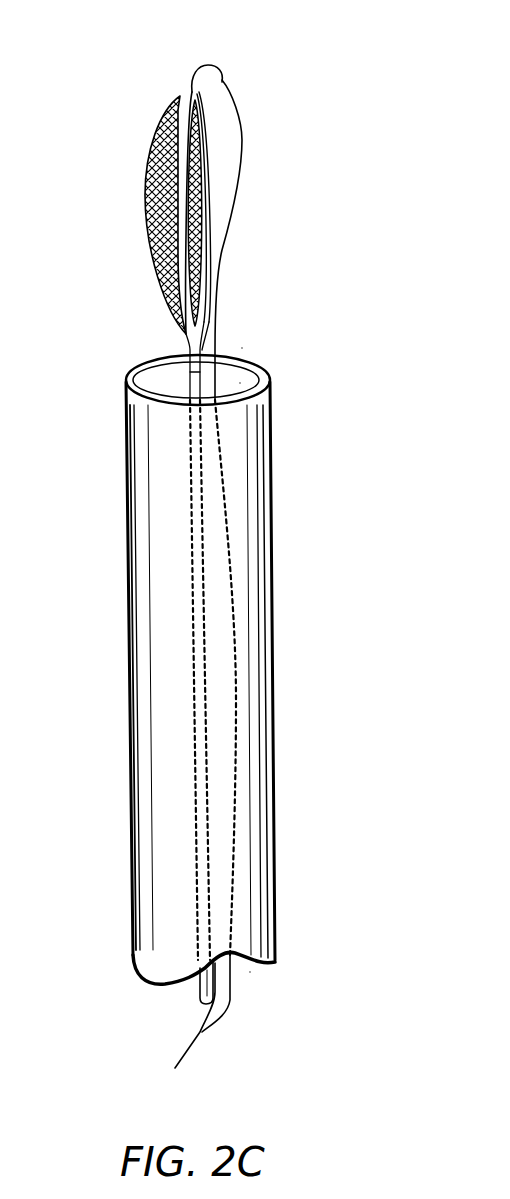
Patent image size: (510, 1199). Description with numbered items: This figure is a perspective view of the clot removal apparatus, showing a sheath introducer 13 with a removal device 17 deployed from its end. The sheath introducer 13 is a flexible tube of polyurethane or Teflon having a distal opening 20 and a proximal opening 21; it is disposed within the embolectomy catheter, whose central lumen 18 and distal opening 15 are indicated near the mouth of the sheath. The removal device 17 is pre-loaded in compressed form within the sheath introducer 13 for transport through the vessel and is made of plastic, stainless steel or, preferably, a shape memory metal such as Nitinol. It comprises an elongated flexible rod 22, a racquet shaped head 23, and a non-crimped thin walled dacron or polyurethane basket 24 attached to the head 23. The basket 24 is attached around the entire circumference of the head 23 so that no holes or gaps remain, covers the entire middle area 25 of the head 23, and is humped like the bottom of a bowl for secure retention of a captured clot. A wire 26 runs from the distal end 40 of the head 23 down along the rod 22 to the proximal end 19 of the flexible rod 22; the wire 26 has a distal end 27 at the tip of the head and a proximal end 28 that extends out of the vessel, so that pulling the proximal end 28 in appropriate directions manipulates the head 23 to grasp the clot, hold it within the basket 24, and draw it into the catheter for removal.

The sheath introducer 13 is at (127, 567).
The distal opening 15 is at (242, 345).
The removal device 17 is at (224, 203).
The central lumen 18 is at (240, 381).
The proximal end of flexible rod 19 is at (198, 1006).
The distal opening 20 is at (166, 373).
The proximal opening 21 is at (252, 975).
The elongated flexible rod 22 is at (193, 745).
The racquet shaped head 23 is at (167, 247).
The basket 24 is at (114, 214).
The middle area 25 is at (212, 192).
The wire 26 is at (233, 652).
The distal end of wire 27 is at (209, 63).
The proximal end of wire 28 is at (200, 1032).
The distal end of head 40 is at (196, 92).